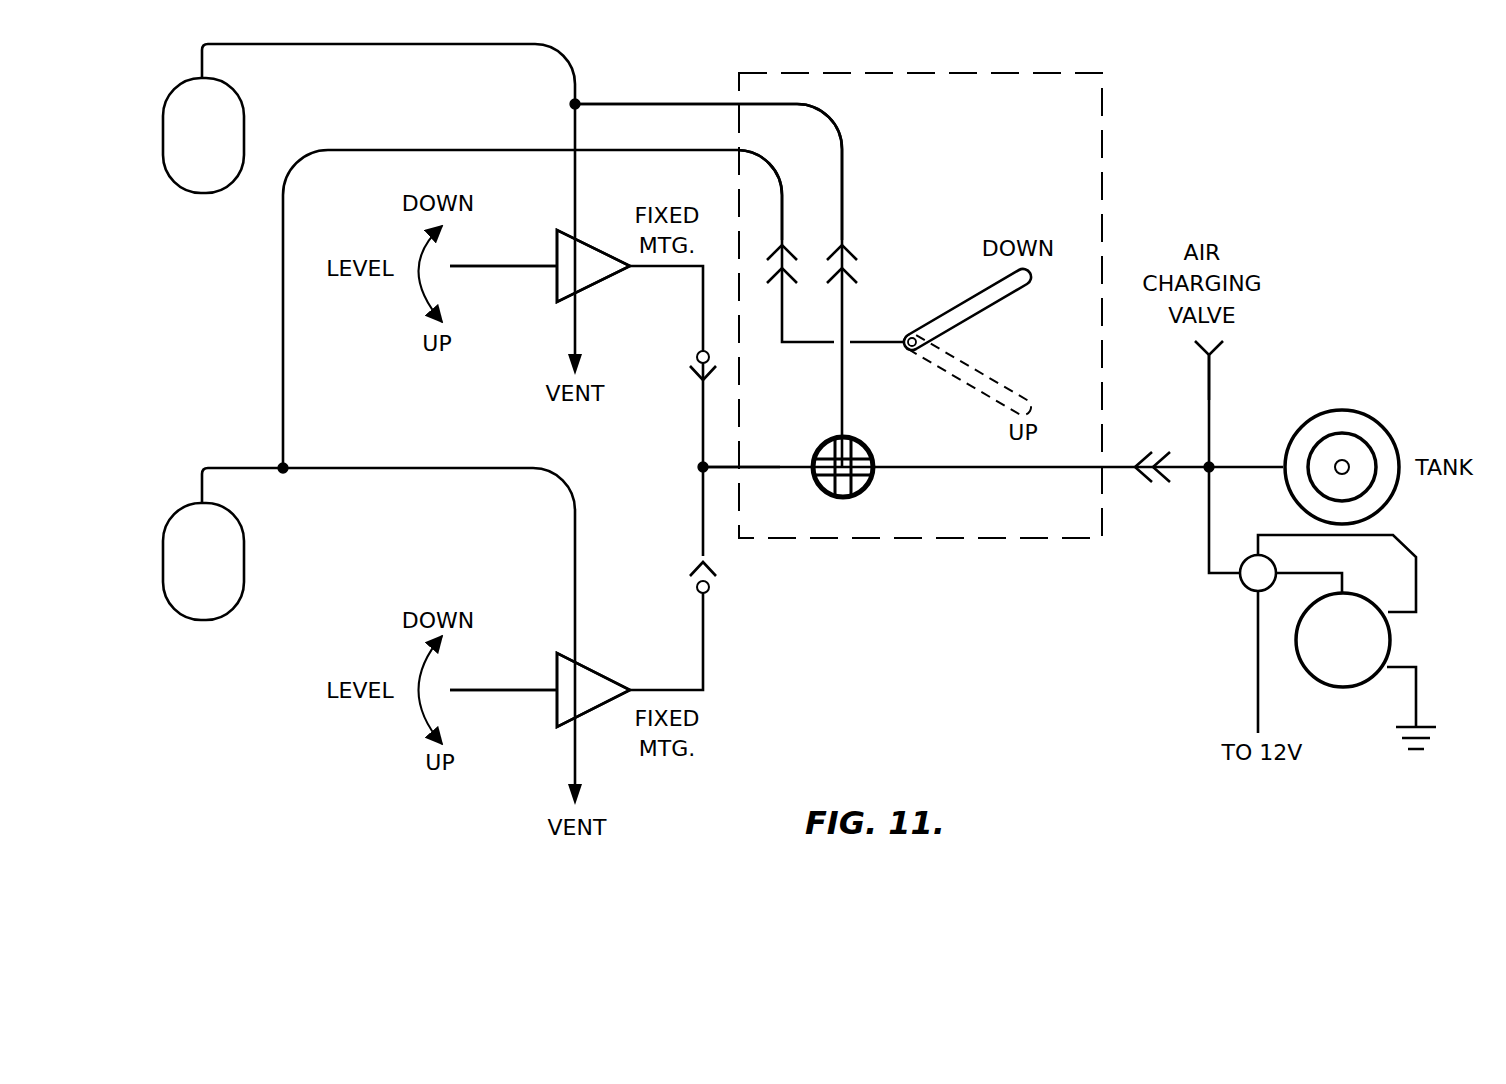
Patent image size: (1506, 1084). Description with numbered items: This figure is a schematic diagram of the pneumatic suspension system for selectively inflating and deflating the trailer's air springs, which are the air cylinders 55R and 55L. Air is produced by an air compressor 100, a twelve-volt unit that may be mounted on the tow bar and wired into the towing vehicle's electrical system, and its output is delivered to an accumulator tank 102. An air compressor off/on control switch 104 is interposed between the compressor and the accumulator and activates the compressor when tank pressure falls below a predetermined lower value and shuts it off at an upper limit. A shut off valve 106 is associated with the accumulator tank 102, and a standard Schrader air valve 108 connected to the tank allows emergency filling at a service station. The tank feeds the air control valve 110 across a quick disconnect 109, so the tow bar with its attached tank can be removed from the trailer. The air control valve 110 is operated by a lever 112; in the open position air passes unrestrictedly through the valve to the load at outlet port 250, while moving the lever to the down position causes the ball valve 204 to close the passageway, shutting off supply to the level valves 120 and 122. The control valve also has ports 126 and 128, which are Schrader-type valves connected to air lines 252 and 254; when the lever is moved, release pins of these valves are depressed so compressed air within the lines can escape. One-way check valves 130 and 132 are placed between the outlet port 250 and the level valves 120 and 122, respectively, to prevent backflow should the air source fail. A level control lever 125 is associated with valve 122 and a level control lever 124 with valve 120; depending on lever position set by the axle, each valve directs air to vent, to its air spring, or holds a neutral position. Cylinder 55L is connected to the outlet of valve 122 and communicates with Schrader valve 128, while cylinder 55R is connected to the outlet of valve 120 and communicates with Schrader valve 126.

The air cylinder 55L is at (203, 135).
The air cylinder 55R is at (203, 561).
The level control lever 125 is at (488, 270).
The level valve 122 is at (600, 284).
The level control lever 124 is at (490, 693).
The level valve 120 is at (600, 674).
The one-way check valve 132 is at (693, 372).
The one-way check valve 130 is at (710, 592).
The outlet port 250 is at (710, 469).
The air line 254 is at (830, 117).
The air line 252 is at (784, 183).
The Schrader-type valve port 126 is at (786, 253).
The Schrader-type valve port 128 is at (850, 262).
The lever 112 is at (990, 302).
The ball valve 204 is at (862, 441).
The air control valve 110 is at (1112, 130).
The Schrader air valve 108 is at (1217, 352).
The accumulator tank 102 is at (1345, 410).
The shut off valve 106 is at (1350, 467).
The quick disconnect 109 is at (1140, 479).
The air compressor off/on control switch 104 is at (1245, 588).
The air compressor 100 is at (1392, 632).